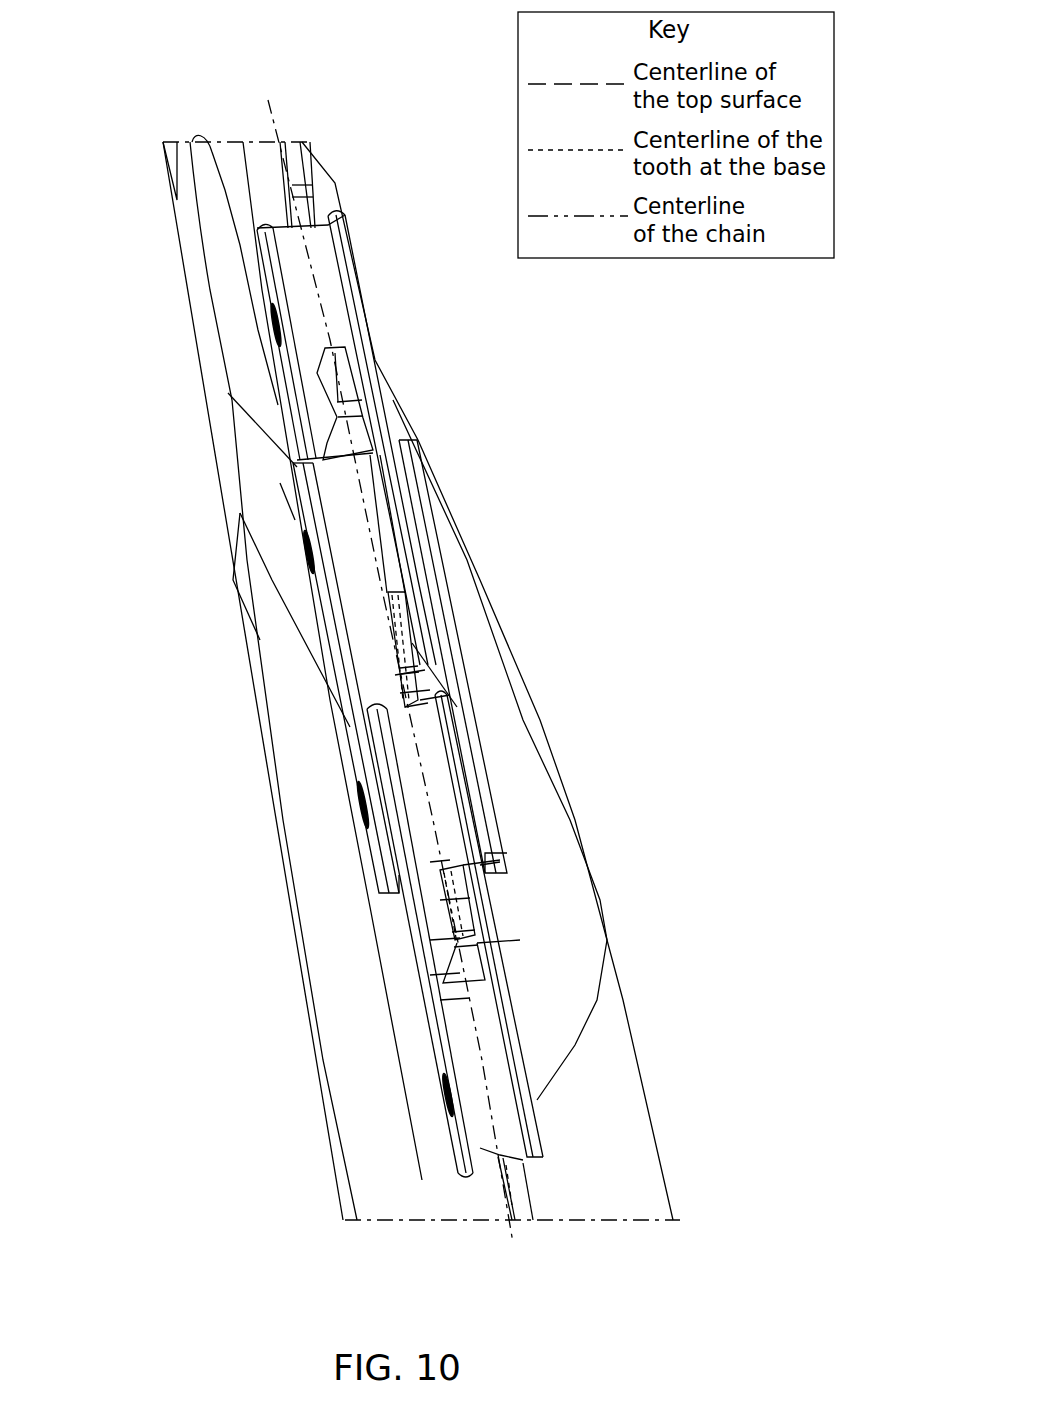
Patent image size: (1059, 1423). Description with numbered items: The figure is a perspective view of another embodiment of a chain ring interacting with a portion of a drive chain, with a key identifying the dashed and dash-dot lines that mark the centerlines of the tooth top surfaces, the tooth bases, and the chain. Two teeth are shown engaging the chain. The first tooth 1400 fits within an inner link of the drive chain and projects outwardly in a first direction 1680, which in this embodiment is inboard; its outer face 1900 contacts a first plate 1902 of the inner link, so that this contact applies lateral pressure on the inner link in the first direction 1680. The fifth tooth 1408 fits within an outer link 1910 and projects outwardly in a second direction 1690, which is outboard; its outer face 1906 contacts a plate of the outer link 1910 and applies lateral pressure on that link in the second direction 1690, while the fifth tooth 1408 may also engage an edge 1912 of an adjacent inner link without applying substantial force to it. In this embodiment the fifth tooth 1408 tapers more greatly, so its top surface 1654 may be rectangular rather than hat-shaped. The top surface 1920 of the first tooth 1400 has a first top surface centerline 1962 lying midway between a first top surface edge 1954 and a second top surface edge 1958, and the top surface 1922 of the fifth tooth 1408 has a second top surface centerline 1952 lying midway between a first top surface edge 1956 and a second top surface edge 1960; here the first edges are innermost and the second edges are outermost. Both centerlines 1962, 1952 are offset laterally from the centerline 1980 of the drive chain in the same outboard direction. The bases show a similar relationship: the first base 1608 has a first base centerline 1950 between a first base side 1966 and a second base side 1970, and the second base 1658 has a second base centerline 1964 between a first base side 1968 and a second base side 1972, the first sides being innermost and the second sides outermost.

The centerline of the drive chain 1980 is at (279, 118).
The second top surface edge 1960 is at (390, 593).
The top surface 1922 is at (405, 598).
The top surface 1654 is at (413, 612).
The second top surface centerline 1952 is at (413, 617).
The fifth tooth 1408 is at (413, 637).
The first top surface edge 1956 is at (395, 652).
The first base side 1968 is at (395, 665).
The second base centerline 1964 is at (395, 693).
The outer face 1906 is at (413, 652).
The second base side 1972 is at (413, 688).
The edge 1912 is at (416, 706).
The second base 1658 is at (423, 724).
The outer link 1910 is at (520, 771).
The first base centerline 1950 is at (488, 866).
The second top surface edge 1958 is at (490, 885).
The top surface 1920 is at (468, 910).
The second base side 1970 is at (485, 965).
The first base 1608 is at (482, 990).
The first top surface centerline 1962 is at (440, 860).
The first top surface edge 1954 is at (440, 870).
The first tooth 1400 is at (440, 900).
The outer face 1900 is at (432, 940).
The first plate 1902 is at (432, 975).
The first base side 1966 is at (442, 1000).
The first direction 1680 is at (160, 937).
The second direction 1690 is at (822, 937).